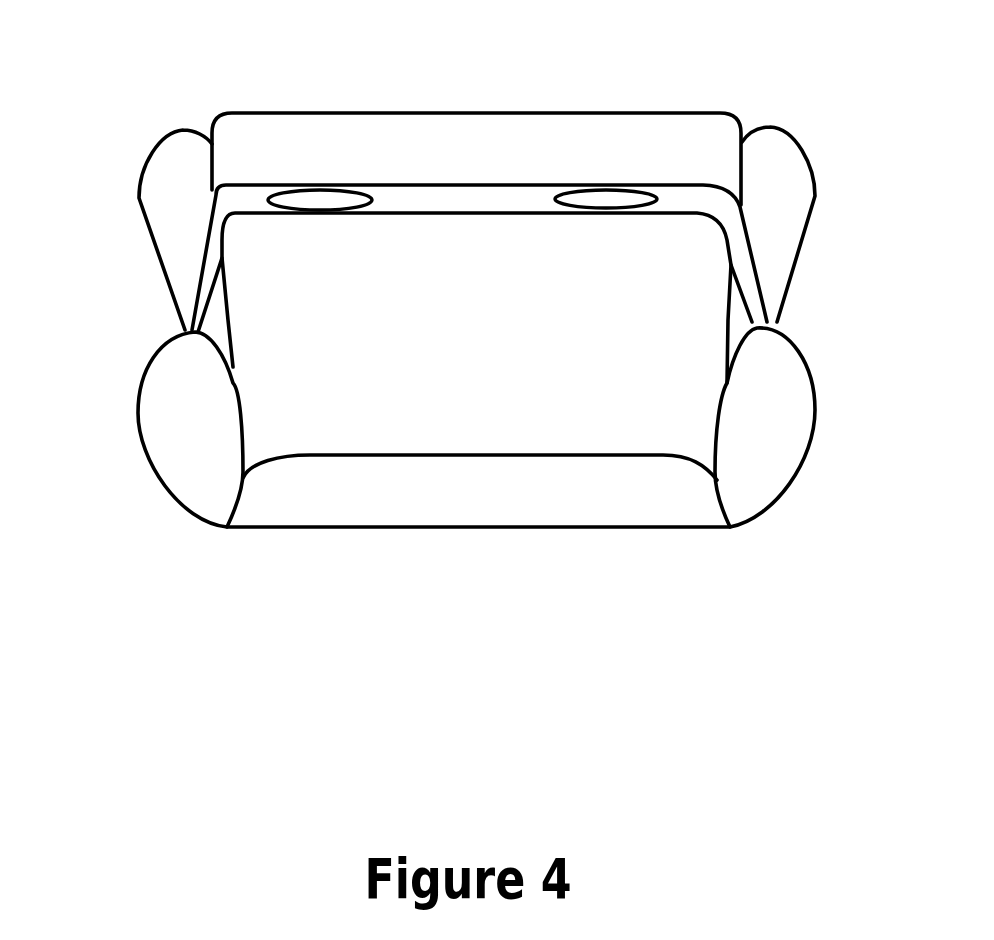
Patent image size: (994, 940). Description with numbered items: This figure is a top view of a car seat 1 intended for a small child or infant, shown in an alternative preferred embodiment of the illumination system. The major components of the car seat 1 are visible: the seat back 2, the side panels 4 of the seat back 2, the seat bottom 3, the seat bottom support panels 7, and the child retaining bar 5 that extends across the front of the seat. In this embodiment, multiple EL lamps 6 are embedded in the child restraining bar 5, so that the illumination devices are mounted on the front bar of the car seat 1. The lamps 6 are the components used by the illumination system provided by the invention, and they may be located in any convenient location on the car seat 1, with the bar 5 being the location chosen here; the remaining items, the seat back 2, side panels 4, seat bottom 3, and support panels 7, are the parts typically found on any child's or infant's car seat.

The car seat 1 is at (222, 604).
The seat back 2 is at (528, 498).
The seat bottom 3 is at (384, 130).
The side panels 4 is at (172, 457).
The child retaining bar 5 is at (698, 200).
The lamps 6 is at (312, 200).
The seat bottom support panels 7 is at (165, 152).